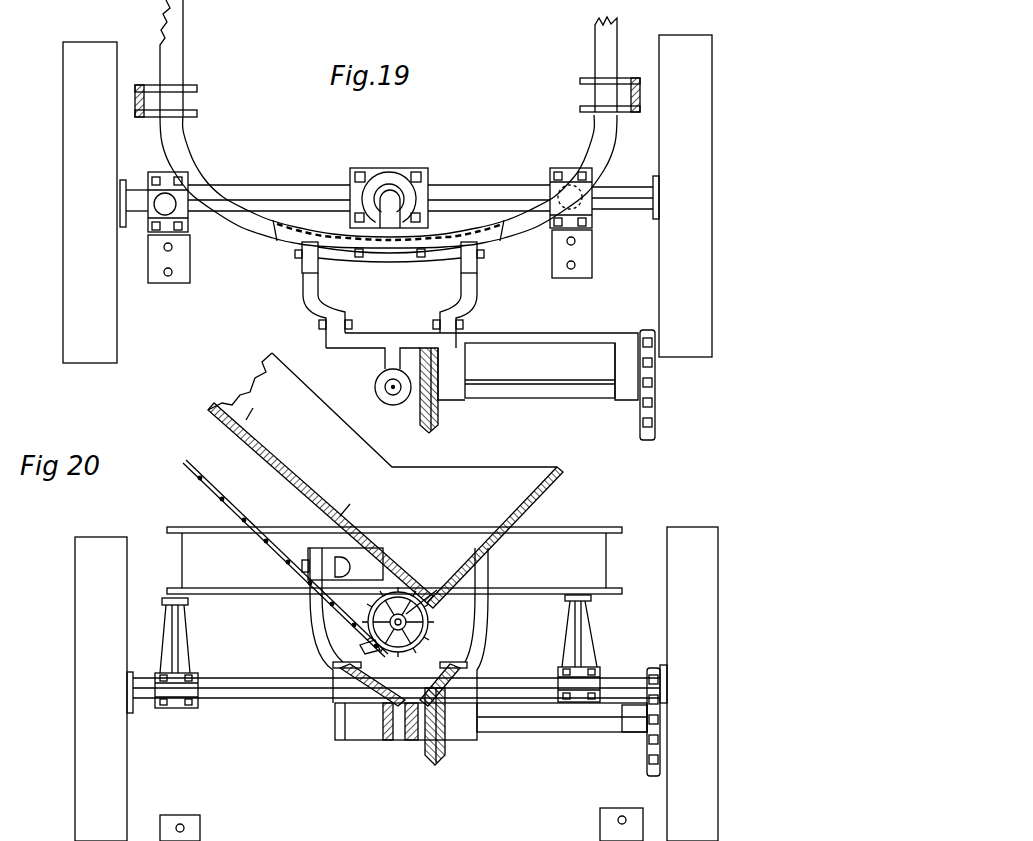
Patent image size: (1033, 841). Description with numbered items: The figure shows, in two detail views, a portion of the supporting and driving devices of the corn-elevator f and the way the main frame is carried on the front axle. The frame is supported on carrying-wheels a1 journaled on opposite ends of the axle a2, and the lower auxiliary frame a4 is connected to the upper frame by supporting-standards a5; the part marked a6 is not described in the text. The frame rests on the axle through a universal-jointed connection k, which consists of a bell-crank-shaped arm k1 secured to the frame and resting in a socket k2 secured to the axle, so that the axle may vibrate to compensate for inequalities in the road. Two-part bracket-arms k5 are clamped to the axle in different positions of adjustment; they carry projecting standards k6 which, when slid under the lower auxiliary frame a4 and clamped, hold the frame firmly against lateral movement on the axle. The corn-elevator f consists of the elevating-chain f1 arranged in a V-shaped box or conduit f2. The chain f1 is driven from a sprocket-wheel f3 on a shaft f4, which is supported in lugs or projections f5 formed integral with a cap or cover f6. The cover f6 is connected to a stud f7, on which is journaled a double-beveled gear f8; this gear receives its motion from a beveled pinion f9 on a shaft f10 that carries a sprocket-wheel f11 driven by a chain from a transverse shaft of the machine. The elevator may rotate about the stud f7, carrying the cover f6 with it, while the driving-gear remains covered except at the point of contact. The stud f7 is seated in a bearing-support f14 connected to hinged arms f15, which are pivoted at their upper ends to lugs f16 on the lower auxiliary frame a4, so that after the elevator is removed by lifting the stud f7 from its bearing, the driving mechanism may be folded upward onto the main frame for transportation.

In FIG. 19, the carrying-wheels a1 is at (387, 199).
In FIG. 20, the carrying-wheels a1 is at (396, 684).
In FIG. 19, the axle a2 is at (273, 197).
In FIG. 20, the axle a2 is at (238, 687).
In FIG. 19, the lower auxiliary frame a4 is at (598, 44).
In FIG. 20, the lower auxiliary frame a4 is at (578, 527).
In FIG. 19, the supporting-standards a5 is at (185, 81).
In FIG. 19, the clamp a6 is at (633, 78).
In FIG. 19, the universal-jointed connection k is at (393, 174).
In FIG. 19, the bell-crank-shaped arm k1 is at (390, 209).
In FIG. 19, the socket k2 is at (383, 176).
In FIG. 19, the two-part bracket-arms k5 is at (186, 244).
In FIG. 20, the two-part bracket-arms k5 is at (177, 710).
In FIG. 19, the projecting standards k6 is at (178, 211).
In FIG. 20, the projecting standards k6 is at (167, 637).
In FIG. 20, the corn-elevator f is at (484, 537).
In FIG. 20, the elevating-chain f1 is at (337, 488).
In FIG. 20, the V-shaped box or conduit f2 is at (382, 478).
In FIG. 20, the sprocket-wheel f3 is at (437, 628).
In FIG. 20, the shaft f4 is at (416, 632).
In FIG. 20, the lugs or projections f5 is at (384, 641).
In FIG. 20, the cap or cover f6 is at (345, 670).
In FIG. 20, the stud f7 is at (393, 728).
In FIG. 20, the double-beveled gear f8 is at (340, 708).
In FIG. 19, the beveled pinion f9 is at (436, 410).
In FIG. 20, the beveled pinion f9 is at (438, 764).
In FIG. 19, the shaft f10 is at (573, 390).
In FIG. 20, the shaft f10 is at (548, 728).
In FIG. 19, the sprocket-wheel f11 is at (658, 400).
In FIG. 20, the sprocket-wheel f11 is at (648, 774).
In FIG. 19, the bearing-support f14 is at (413, 341).
In FIG. 20, the bearing-support f14 is at (417, 742).
In FIG. 19, the hinged arms f15 is at (313, 294).
In FIG. 20, the hinged arms f15 is at (312, 628).
In FIG. 19, the lugs f16 is at (446, 266).
In FIG. 20, the lugs f16 is at (333, 566).